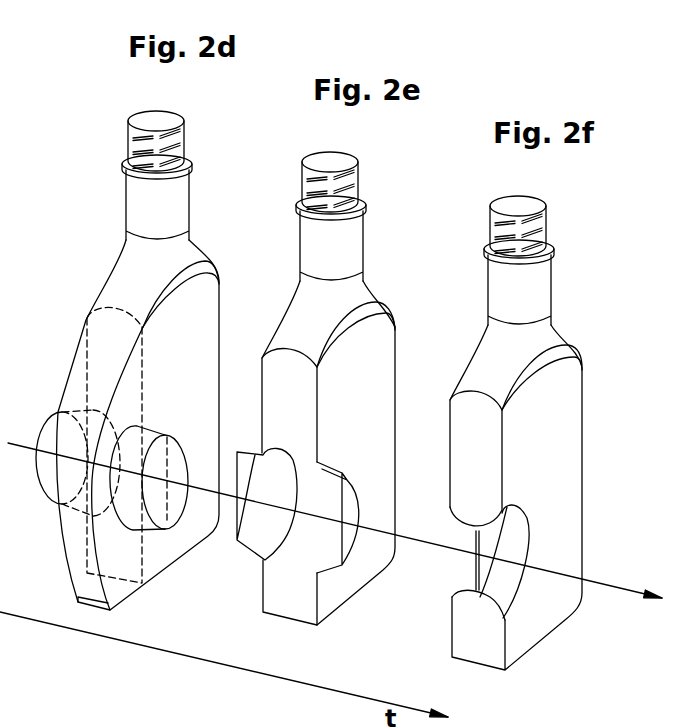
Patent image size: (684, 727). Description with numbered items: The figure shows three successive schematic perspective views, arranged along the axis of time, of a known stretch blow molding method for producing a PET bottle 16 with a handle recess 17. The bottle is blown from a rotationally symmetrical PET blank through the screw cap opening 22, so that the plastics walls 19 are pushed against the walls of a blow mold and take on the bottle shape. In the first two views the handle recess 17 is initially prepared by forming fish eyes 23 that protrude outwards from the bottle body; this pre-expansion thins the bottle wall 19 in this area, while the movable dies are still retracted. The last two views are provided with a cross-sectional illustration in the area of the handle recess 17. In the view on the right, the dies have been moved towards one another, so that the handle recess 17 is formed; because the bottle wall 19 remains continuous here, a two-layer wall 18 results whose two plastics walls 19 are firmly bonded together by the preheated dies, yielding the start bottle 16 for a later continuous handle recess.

In FIG. 2d, the screw cap opening 22 is at (147, 122).
In FIG. 2e, the screw cap opening 22 is at (322, 162).
In FIG. 2f, the screw cap opening 22 is at (510, 207).
In FIG. 2d, the fish eyes 23 is at (47, 443).
In FIG. 2f, the PET bottle 16 is at (603, 238).
In FIG. 2f, the bottle wall 19 is at (557, 402).
In FIG. 2f, the handle recess 17 is at (513, 550).
In FIG. 2f, the two-layer wall 18 is at (472, 577).